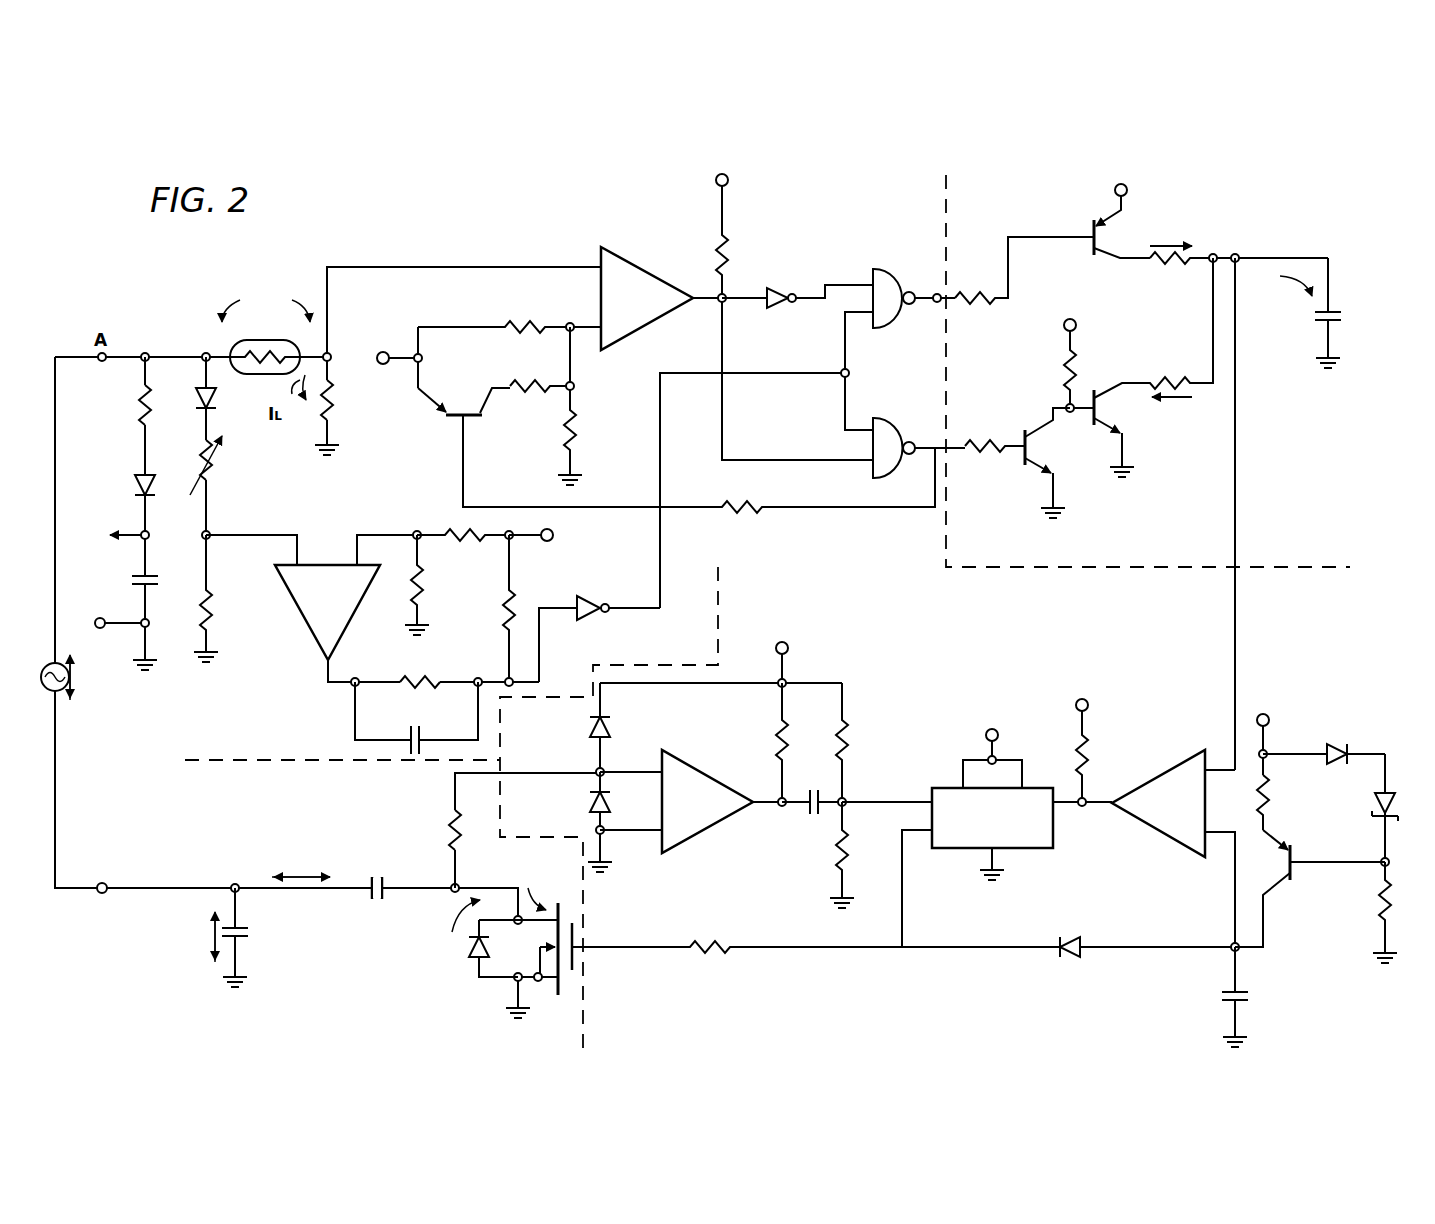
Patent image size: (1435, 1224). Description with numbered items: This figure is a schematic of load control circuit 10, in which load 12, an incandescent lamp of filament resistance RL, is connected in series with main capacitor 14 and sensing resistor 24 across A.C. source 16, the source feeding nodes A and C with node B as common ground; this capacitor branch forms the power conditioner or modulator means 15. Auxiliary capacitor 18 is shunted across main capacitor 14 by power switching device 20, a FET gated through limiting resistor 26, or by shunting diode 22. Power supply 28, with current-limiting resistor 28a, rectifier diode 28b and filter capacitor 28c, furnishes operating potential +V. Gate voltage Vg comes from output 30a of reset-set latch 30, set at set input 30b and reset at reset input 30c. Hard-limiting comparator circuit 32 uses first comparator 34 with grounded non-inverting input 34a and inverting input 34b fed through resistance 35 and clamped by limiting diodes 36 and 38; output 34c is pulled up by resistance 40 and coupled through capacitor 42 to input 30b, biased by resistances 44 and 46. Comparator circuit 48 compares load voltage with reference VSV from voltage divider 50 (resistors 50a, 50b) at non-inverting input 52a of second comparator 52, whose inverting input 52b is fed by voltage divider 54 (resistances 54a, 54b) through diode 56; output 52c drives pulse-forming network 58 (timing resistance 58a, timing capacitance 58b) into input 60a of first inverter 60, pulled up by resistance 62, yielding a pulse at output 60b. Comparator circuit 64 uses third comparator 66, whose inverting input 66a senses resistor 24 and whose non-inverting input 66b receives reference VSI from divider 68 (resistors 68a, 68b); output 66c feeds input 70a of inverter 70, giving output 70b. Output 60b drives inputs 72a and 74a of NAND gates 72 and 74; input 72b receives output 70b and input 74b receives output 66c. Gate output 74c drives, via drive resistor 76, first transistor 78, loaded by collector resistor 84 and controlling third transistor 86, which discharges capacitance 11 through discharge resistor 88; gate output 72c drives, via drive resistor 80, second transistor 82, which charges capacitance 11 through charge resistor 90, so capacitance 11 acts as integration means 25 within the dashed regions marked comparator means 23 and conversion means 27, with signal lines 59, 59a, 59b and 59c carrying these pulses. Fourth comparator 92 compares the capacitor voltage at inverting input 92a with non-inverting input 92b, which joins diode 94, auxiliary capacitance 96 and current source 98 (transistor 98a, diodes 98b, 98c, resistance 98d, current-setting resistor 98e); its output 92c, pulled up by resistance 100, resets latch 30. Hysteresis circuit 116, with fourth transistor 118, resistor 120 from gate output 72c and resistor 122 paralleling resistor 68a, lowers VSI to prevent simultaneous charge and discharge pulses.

The load control circuit 10 is at (142, 296).
The capacitance 11 is at (1318, 318).
The load 12 is at (262, 378).
The main capacitor 14 is at (242, 940).
The power conditioner or modulator means 15 is at (212, 917).
The A.C. power source 16 is at (62, 712).
The auxiliary capacitor 18 is at (368, 902).
The power switching device 20 is at (554, 932).
The shunting diode 22 is at (466, 956).
The discrete sampling resistance comparator means 23 is at (854, 552).
The sensing resistor 24 is at (333, 420).
The integration means 25 is at (1118, 552).
The limiting resistor 26 is at (690, 942).
The integral-to-control signal conversion means 27 is at (1031, 622).
The logic operating potential power supply 28 is at (109, 513).
The current-limiting resistor 28a is at (140, 408).
The rectifier diode 28b is at (136, 484).
The filter capacitor 28c is at (131, 582).
The reset-set latch 30 is at (977, 828).
The latch output 30a is at (910, 832).
The set input 30b is at (882, 796).
The reset input 30c is at (1058, 798).
The hard-limiting comparator circuit 32 is at (685, 772).
The first comparator 34 is at (691, 796).
The non-inverting input 34a is at (656, 840).
The inverting input 34b is at (658, 766).
The comparator output 34c is at (762, 798).
The resistance 35 is at (448, 830).
The limiting diode 36 is at (588, 802).
The limiting diode 38 is at (588, 726).
The resistance 40 is at (772, 742).
The coupling capacitor 42 is at (806, 792).
The first resistance 44 is at (832, 738).
The second resistance 46 is at (836, 846).
The comparator circuit 48 is at (761, 602).
The voltage divider 50 is at (489, 584).
The resistor 50a is at (458, 530).
The resistor 50b is at (425, 592).
The second comparator 52 is at (318, 635).
The non-inverting input 52a is at (362, 550).
The inverting input 52b is at (290, 550).
The second comparator output 52c is at (335, 665).
The voltage divider 54 is at (236, 549).
The first resistance 54a is at (212, 612).
The second resistance 54b is at (222, 476).
The diode 56 is at (212, 404).
The pulse-forming network 58 is at (405, 716).
The timing resistance 58a is at (405, 690).
The timing capacitance 58b is at (425, 734).
The signal line 59 is at (681, 499).
The signal line 59a is at (536, 625).
The signal line 59b is at (700, 300).
The signal line 59c is at (1212, 266).
The first inverter 60 is at (599, 618).
The inverter input 60a is at (542, 640).
The first inverter output 60b is at (608, 600).
The resistance element 62 is at (505, 600).
The comparator circuit 64 is at (637, 319).
The third comparator 66 is at (635, 246).
The inverting input 66a is at (598, 262).
The non-inverting input 66b is at (605, 350).
The third comparator output 66c is at (712, 296).
The voltage divider 68 is at (716, 250).
The resistor 68a is at (520, 322).
The resistor 68b is at (565, 440).
The inverter 70 is at (797, 288).
The inverter input 70a is at (745, 308).
The inverter output 70b is at (828, 282).
The NAND gate 72 is at (898, 327).
The gate input 72a is at (855, 345).
The gate input 72b is at (867, 282).
The gate output 72c is at (937, 292).
The NAND gate 74 is at (874, 438).
The gate input 74a is at (868, 428).
The gate input 74b is at (850, 458).
The gate output 74c is at (912, 440).
The drive resistor 76 is at (962, 438).
The first transistor 78 is at (1012, 466).
The drive resistor 80 is at (978, 292).
The second transistor 82 is at (1105, 232).
The collector resistor 84 is at (1062, 362).
The third transistor 86 is at (1112, 420).
The discharge resistor 88 is at (1174, 376).
The charge resistor 90 is at (1165, 266).
The fourth comparator 92 is at (1163, 817).
The inverting input 92a is at (1212, 760).
The non-inverting input 92b is at (1216, 842).
The fourth comparator output 92c is at (1100, 800).
The diode 94 is at (1080, 940).
The auxiliary capacitance 96 is at (1220, 994).
The current source 98 is at (1331, 853).
The current source transistor 98a is at (1262, 890).
The diode 98b is at (1326, 744).
The diode 98c is at (1396, 788).
The resistance element 98d is at (1376, 906).
The current-setting resistor 98e is at (1274, 800).
The pull-up resistance 100 is at (1076, 734).
The hysteresis circuit 116 is at (640, 420).
The fourth transistor 118 is at (440, 398).
The resistor 120 is at (730, 498).
The resistor 122 is at (530, 382).